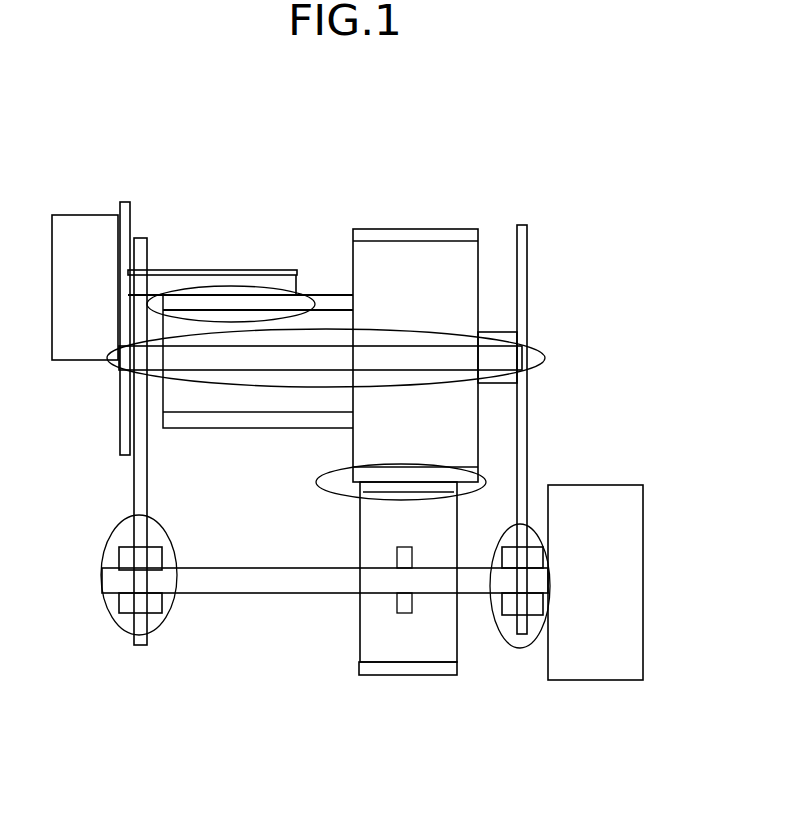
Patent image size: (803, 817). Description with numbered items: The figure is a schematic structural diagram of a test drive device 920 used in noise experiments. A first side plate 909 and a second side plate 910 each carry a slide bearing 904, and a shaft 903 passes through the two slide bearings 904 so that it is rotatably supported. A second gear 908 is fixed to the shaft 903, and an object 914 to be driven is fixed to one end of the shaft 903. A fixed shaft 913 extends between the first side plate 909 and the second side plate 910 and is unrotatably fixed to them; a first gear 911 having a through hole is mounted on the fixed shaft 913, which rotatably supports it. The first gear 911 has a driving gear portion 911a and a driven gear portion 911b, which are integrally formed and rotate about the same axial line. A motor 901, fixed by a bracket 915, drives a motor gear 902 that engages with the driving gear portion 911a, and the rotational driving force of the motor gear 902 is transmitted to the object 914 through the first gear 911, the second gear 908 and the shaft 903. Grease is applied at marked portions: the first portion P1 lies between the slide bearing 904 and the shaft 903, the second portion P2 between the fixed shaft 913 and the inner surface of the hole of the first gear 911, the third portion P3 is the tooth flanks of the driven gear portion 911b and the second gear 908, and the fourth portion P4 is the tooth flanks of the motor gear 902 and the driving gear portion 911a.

The test drive device 920 is at (531, 156).
The motor 901 is at (78, 213).
The motor gear 902 is at (172, 270).
The shaft 903 is at (245, 567).
The slide bearings 904 is at (128, 602).
The second gear 908 is at (388, 670).
The first side plate 909 is at (147, 465).
The second side plate 910 is at (528, 405).
The first gear 911 is at (480, 157).
The driving gear portion 911a is at (322, 293).
The driven gear portion 911b is at (420, 229).
The fixed shaft 913 is at (483, 352).
The object to be driven 914 is at (645, 523).
The bracket 915 is at (120, 405).
The first portion P1 is at (122, 632).
The second portion P2 is at (545, 350).
The third portion P3 is at (483, 474).
The fourth portion P4 is at (240, 287).